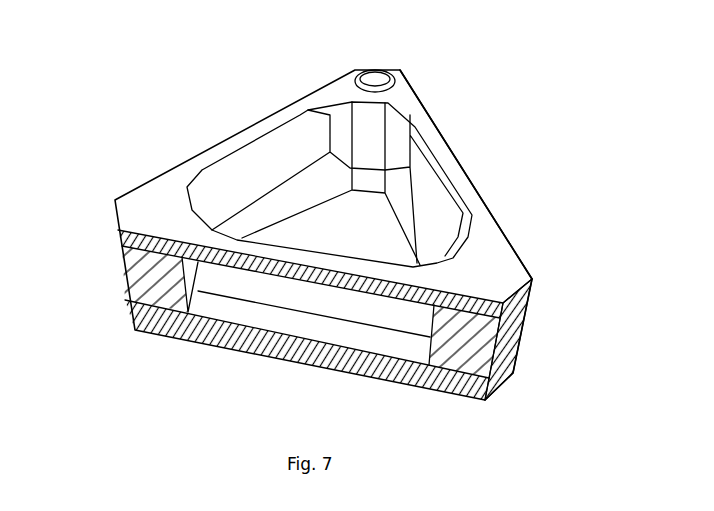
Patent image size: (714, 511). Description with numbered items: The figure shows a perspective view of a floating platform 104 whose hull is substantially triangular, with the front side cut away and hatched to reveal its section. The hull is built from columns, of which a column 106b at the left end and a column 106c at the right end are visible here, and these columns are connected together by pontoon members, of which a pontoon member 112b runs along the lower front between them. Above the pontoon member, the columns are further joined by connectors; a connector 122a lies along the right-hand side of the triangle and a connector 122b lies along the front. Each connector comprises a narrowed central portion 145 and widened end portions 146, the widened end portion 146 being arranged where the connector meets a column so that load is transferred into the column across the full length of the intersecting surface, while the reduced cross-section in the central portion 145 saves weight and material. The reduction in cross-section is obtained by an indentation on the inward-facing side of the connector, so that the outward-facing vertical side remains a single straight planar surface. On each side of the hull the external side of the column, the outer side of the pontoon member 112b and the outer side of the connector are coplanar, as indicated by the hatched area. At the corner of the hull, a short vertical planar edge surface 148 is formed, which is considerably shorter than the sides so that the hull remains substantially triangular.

The floating platform 104 is at (203, 93).
The widened end portion 146 is at (432, 108).
The narrowed central portion 145 is at (470, 163).
The connector 122a is at (467, 189).
The connector 122b is at (277, 253).
The column 106b is at (145, 278).
The pontoon member 112b is at (273, 357).
The column 106c is at (487, 399).
The planar edge surface 148 is at (534, 339).